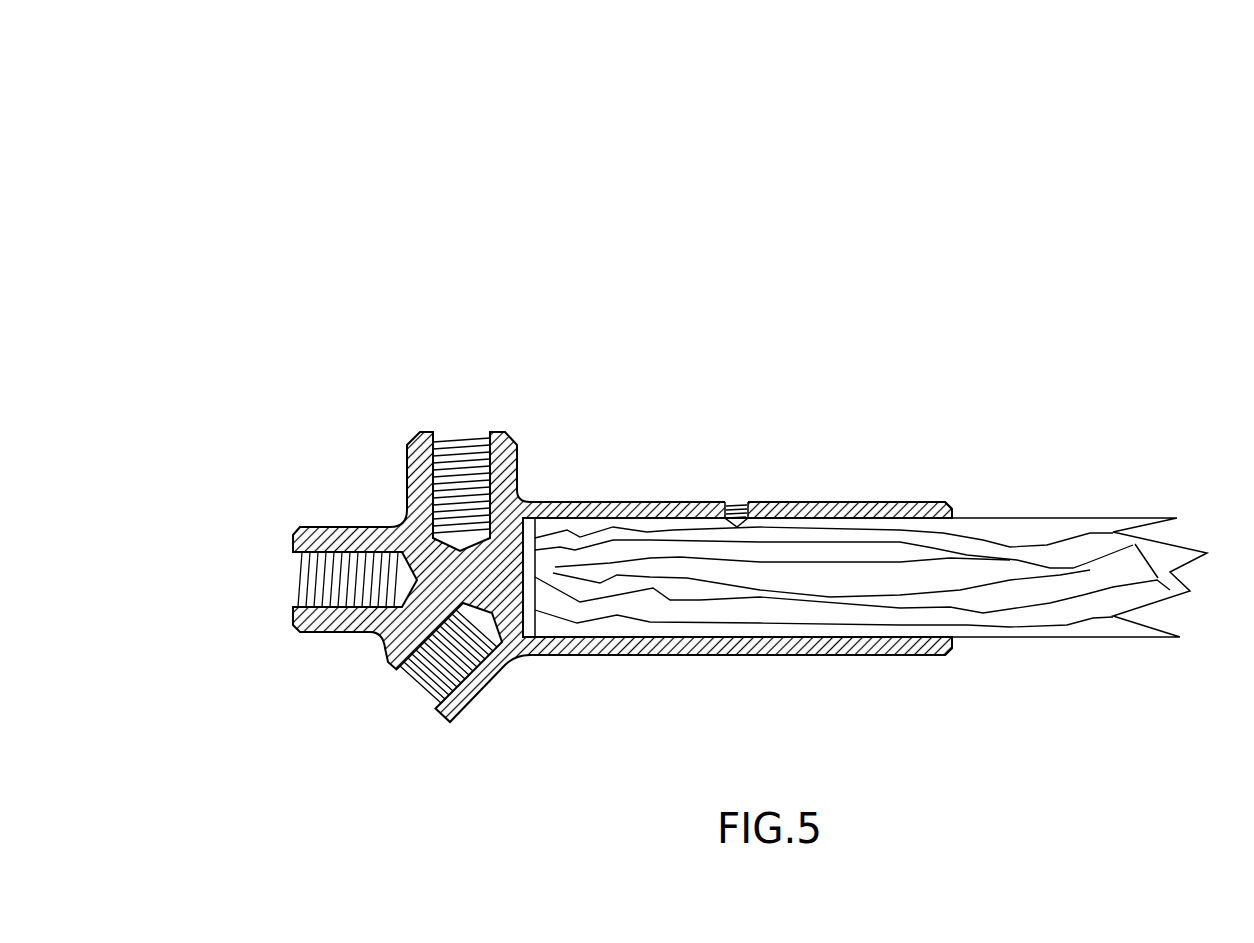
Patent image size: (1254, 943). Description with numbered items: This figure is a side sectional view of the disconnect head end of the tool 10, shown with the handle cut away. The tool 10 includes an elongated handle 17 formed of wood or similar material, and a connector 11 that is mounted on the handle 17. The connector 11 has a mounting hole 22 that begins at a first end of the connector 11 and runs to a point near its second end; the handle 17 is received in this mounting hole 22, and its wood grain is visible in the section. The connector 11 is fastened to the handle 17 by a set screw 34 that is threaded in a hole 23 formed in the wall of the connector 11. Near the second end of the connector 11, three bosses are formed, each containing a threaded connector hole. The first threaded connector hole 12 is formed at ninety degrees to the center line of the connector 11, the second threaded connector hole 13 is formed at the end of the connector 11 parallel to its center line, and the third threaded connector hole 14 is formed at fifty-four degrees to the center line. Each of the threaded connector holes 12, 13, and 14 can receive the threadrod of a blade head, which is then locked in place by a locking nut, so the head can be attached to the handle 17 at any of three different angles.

The tool 10 is at (562, 256).
The connector 11 is at (857, 500).
The first threaded connector hole 12 is at (460, 458).
The second threaded connector hole 13 is at (337, 585).
The third threaded connector hole 14 is at (432, 697).
The elongated handle 17 is at (1018, 560).
The mounting hole 22 is at (835, 517).
The hole 23 is at (727, 507).
The set screw 34 is at (737, 503).